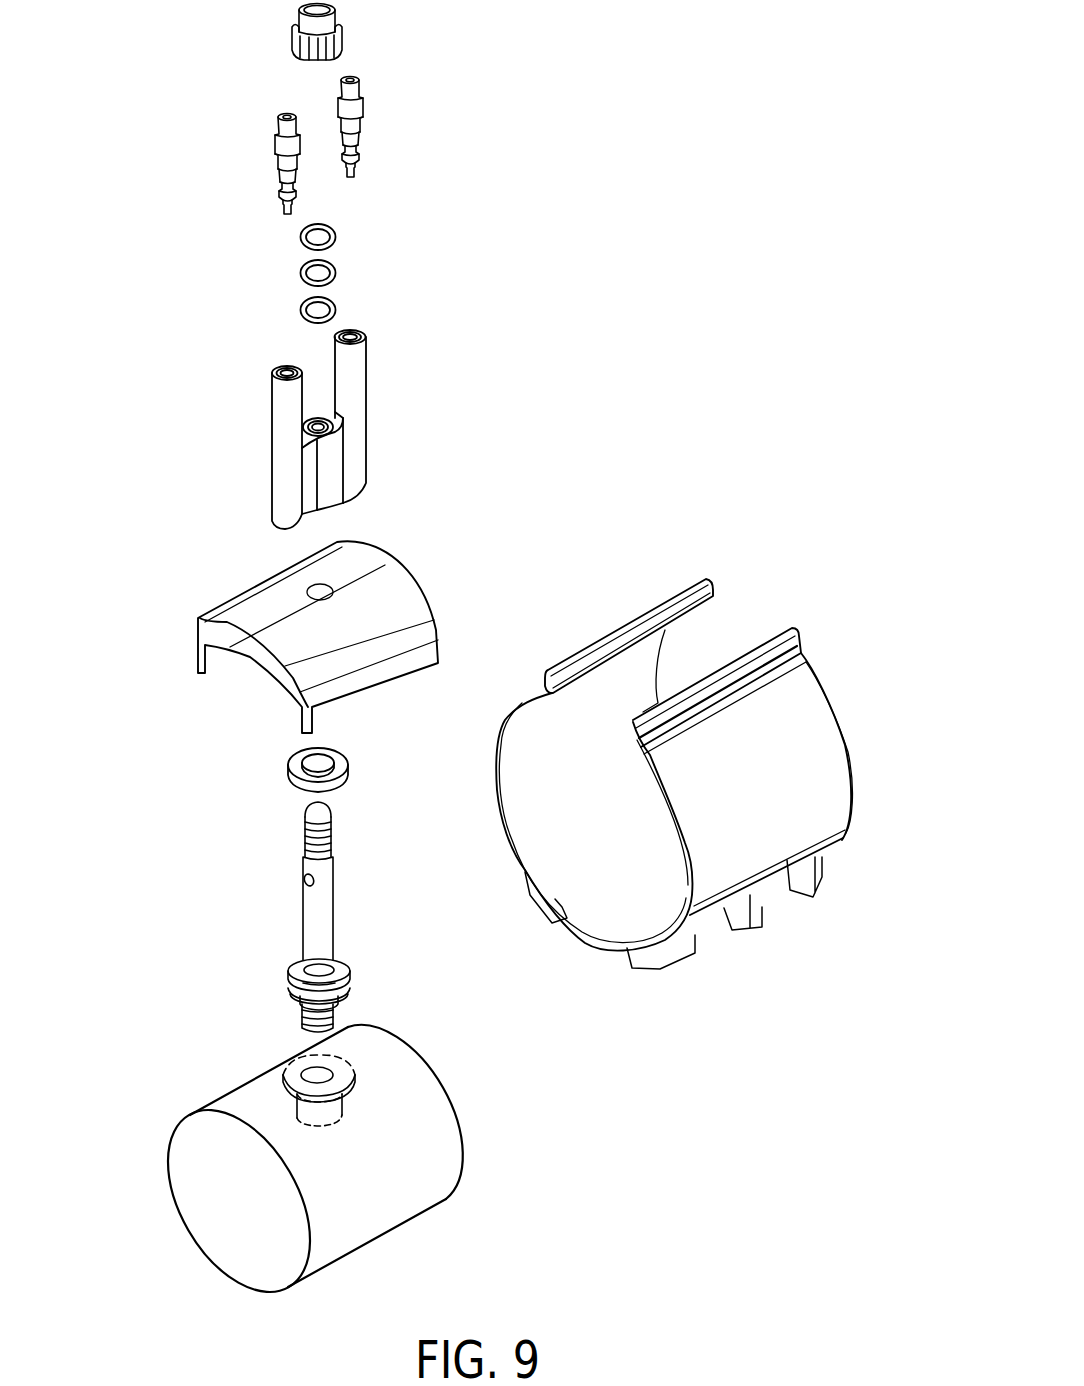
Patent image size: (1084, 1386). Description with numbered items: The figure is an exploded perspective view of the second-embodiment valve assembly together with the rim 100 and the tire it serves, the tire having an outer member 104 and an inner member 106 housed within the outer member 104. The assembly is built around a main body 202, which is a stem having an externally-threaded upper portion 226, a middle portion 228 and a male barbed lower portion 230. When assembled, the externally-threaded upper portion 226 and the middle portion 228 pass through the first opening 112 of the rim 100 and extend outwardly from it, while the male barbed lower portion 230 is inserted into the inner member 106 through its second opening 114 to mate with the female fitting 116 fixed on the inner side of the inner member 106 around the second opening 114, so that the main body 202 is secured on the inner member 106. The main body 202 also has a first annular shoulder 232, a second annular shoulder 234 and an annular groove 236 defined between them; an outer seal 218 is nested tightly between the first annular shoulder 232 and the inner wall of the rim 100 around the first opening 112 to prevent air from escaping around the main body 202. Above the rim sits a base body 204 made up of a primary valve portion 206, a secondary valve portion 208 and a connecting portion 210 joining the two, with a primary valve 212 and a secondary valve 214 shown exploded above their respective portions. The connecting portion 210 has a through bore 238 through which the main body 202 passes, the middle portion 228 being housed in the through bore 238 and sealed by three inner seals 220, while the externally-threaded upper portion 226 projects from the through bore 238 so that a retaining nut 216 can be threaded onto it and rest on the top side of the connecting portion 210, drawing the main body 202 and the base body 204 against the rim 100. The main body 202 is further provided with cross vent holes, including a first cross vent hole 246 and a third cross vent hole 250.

The rim 100 is at (360, 619).
The outer member 104 is at (749, 846).
The inner member 106 is at (344, 1168).
The first opening 112 is at (327, 597).
The second opening 114 is at (323, 1072).
The female fitting 116 is at (361, 1109).
The main body 202 is at (300, 920).
The base body 204 is at (326, 418).
The primary valve portion 206 is at (278, 403).
The secondary valve portion 208 is at (355, 362).
The connecting portion 210 is at (330, 463).
The primary valve 212 is at (256, 150).
The secondary valve 214 is at (381, 124).
The retaining nut 216 is at (362, 35).
The outer seal 218 is at (337, 760).
The inner seals 220 is at (355, 229).
The externally-threaded upper portion 226 is at (333, 837).
The middle portion 228 is at (332, 917).
The male barbed lower portion 230 is at (337, 1010).
The first annular shoulder 232 is at (293, 970).
The second annular shoulder 234 is at (313, 993).
The annular groove 236 is at (287, 990).
The through bore 238 is at (318, 423).
The first cross vent hole 246 is at (303, 882).
The third cross vent hole 250 is at (343, 973).